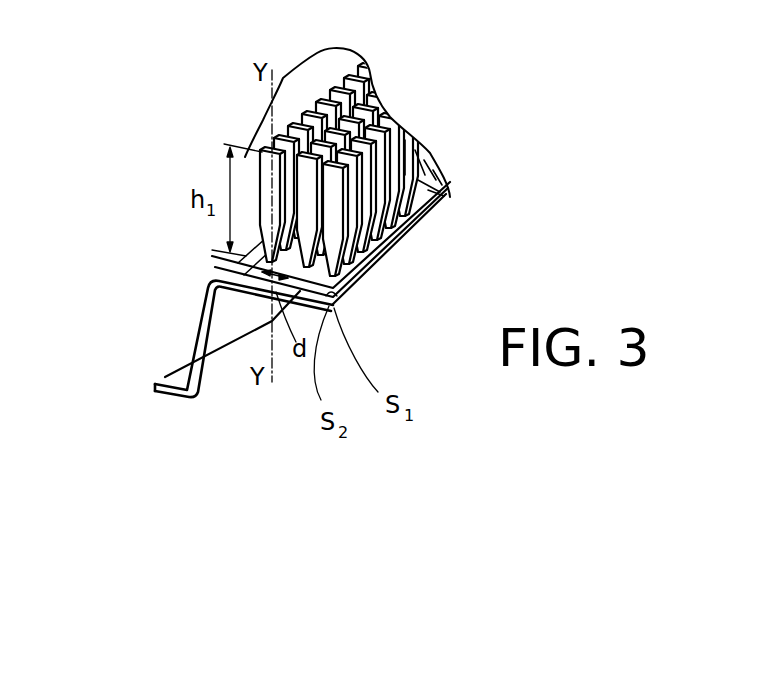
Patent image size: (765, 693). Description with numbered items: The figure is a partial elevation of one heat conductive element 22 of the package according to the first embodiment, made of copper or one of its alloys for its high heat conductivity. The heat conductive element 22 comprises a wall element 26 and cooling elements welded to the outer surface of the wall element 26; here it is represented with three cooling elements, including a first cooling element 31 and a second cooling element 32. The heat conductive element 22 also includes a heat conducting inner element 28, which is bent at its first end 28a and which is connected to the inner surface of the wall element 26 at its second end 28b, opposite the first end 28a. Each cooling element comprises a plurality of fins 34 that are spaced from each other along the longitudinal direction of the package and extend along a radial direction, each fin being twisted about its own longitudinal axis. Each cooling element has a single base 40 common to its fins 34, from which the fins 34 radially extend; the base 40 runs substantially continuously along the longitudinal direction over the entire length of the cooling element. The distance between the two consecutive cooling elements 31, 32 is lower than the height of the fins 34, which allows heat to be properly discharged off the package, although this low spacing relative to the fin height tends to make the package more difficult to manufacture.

The heat conductive element 22 is at (236, 376).
The wall element 26 is at (220, 258).
The heat conducting inner element 28 is at (207, 313).
The first end 28a is at (166, 381).
The second end 28b is at (232, 295).
The first cooling element 31 is at (307, 152).
The second cooling element 32 is at (452, 190).
The fins 34 is at (266, 173).
The base 40 is at (335, 296).